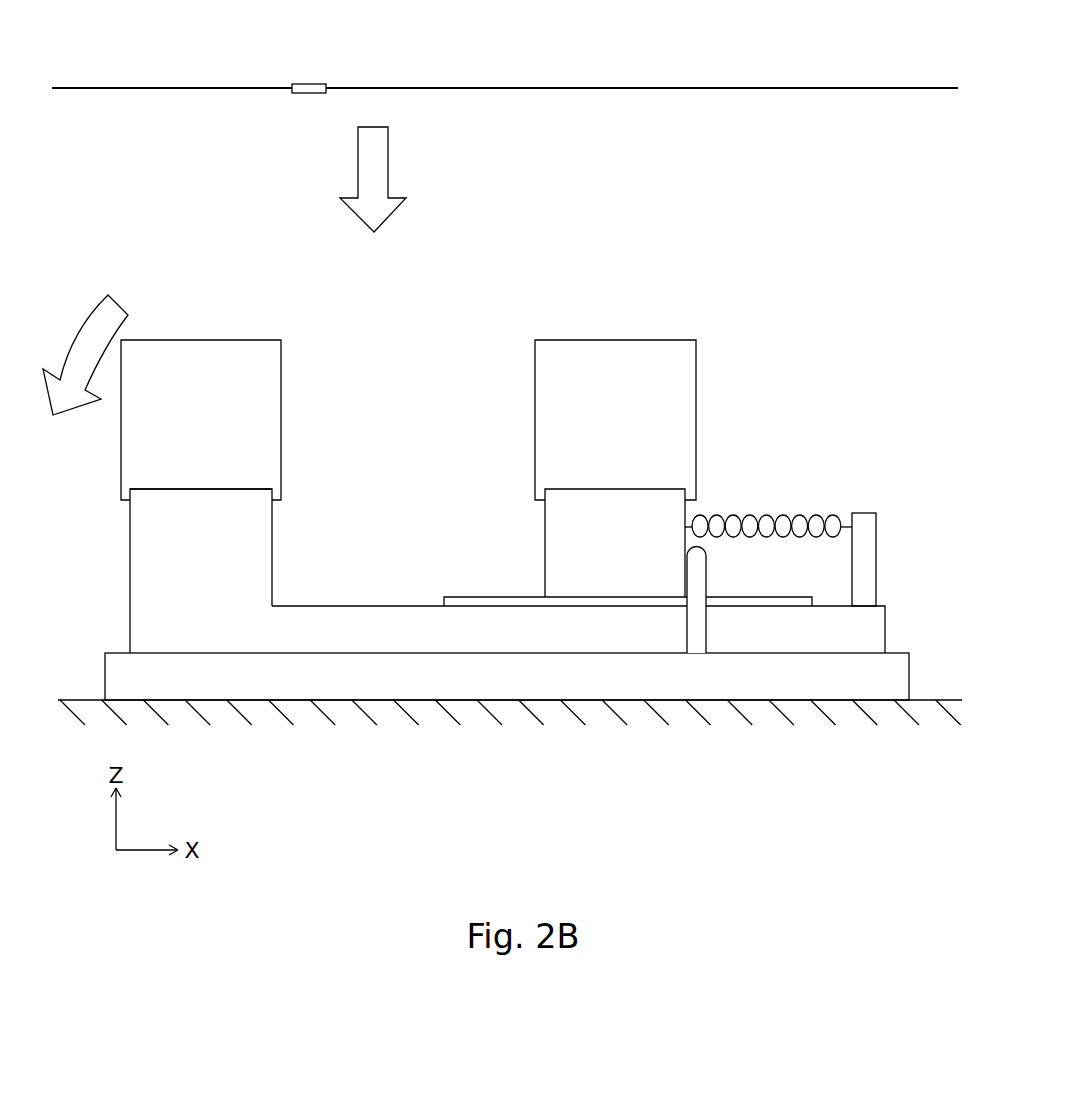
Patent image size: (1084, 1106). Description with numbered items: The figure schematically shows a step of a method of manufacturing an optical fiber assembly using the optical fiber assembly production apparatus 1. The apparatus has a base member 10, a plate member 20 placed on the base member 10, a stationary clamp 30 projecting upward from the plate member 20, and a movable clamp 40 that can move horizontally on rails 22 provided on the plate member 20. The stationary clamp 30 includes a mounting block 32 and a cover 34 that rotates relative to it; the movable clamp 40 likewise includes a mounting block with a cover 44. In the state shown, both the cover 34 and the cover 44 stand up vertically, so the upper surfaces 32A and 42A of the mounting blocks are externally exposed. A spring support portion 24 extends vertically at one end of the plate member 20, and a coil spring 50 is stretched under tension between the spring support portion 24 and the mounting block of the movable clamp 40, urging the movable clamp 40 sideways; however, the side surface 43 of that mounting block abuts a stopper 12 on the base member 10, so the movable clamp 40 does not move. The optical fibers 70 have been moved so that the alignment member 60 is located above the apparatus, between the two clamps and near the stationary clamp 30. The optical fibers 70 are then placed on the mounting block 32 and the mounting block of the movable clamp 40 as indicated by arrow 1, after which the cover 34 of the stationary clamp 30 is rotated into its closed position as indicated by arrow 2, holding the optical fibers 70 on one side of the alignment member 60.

The optical fiber assembly production apparatus 1 is at (373, 179).
The arrow indicating rotation of the cover 2 is at (85, 355).
The base member 10 is at (112, 652).
The stopper 12 is at (702, 572).
The plate member 20 is at (380, 612).
The rails 22 is at (475, 598).
The spring support portion 24 is at (866, 553).
The stationary clamp 30 is at (237, 461).
The mounting block 32 is at (140, 539).
The upper surface 32A is at (228, 490).
The cover 34 is at (198, 350).
The movable clamp 40 is at (617, 436).
The upper surface 42A is at (568, 489).
The side surface 43 is at (688, 516).
The cover 44 is at (612, 350).
The coil spring 50 is at (815, 515).
The alignment member 60 is at (306, 82).
The optical fibers 70 is at (510, 85).